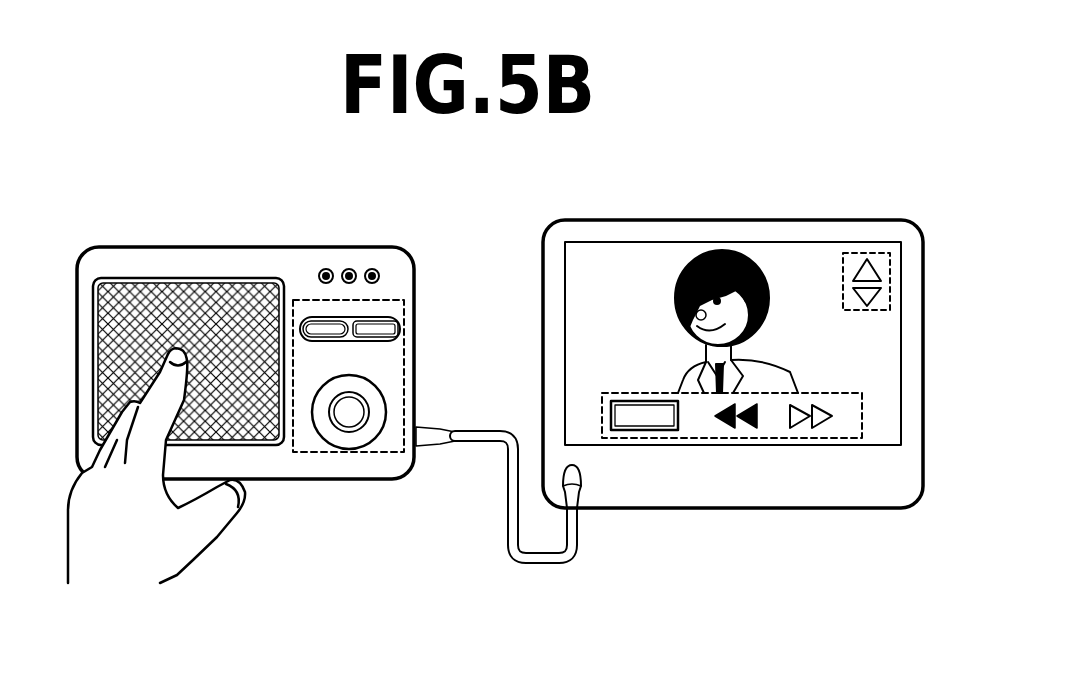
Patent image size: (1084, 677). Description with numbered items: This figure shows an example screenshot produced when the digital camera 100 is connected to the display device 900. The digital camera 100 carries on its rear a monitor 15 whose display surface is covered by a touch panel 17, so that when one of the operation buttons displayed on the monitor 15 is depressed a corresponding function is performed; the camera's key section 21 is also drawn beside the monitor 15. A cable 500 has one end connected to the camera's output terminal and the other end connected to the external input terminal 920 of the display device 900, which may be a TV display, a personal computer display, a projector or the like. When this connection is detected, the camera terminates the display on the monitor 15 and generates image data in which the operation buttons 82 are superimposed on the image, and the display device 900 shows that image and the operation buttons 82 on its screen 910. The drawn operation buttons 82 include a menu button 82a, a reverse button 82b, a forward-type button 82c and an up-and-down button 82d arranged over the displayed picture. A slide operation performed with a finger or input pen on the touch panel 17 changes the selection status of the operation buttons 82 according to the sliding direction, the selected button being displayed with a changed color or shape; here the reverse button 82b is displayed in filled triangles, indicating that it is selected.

The monitor 15 is at (188, 302).
The touch panel 17 is at (190, 278).
The operation key section 21 is at (355, 452).
The operation buttons 82 is at (758, 439).
The menu key 82a is at (640, 430).
The reverse button 82b is at (745, 429).
The fast-forward key 82c is at (810, 430).
The up/down key 82d is at (875, 312).
The digital camera 100 is at (245, 353).
The cable 500 is at (470, 428).
The display device 900 is at (733, 366).
The screen 910 is at (618, 262).
The external input terminal 920 is at (568, 465).